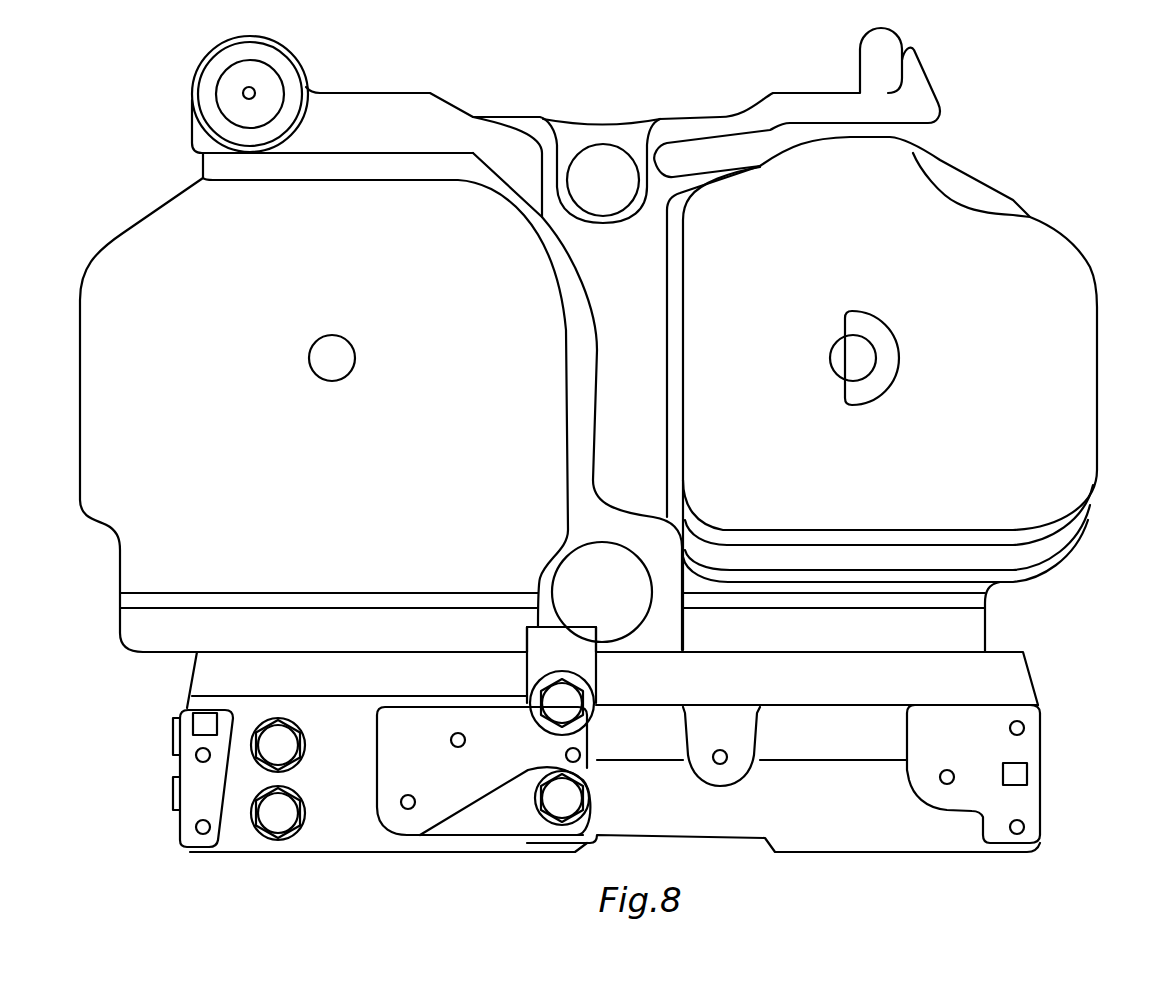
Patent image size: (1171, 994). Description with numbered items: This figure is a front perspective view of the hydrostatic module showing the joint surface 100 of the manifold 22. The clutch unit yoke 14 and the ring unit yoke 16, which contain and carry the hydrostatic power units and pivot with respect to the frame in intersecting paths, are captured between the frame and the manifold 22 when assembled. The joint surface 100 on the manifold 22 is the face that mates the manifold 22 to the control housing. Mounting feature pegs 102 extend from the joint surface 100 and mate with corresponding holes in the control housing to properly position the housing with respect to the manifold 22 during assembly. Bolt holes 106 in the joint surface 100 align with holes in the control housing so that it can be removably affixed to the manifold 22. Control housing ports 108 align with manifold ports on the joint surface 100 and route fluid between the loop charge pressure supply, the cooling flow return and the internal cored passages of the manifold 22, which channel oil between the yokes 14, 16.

The clutch unit yoke 14 is at (120, 230).
The ring unit yoke 16 is at (1085, 258).
The manifold 22 is at (1043, 722).
The joint surface 100 is at (188, 767).
The mounting feature pegs 102 is at (190, 713).
The bolt holes 106 is at (200, 762).
The control housing ports 108 is at (408, 810).